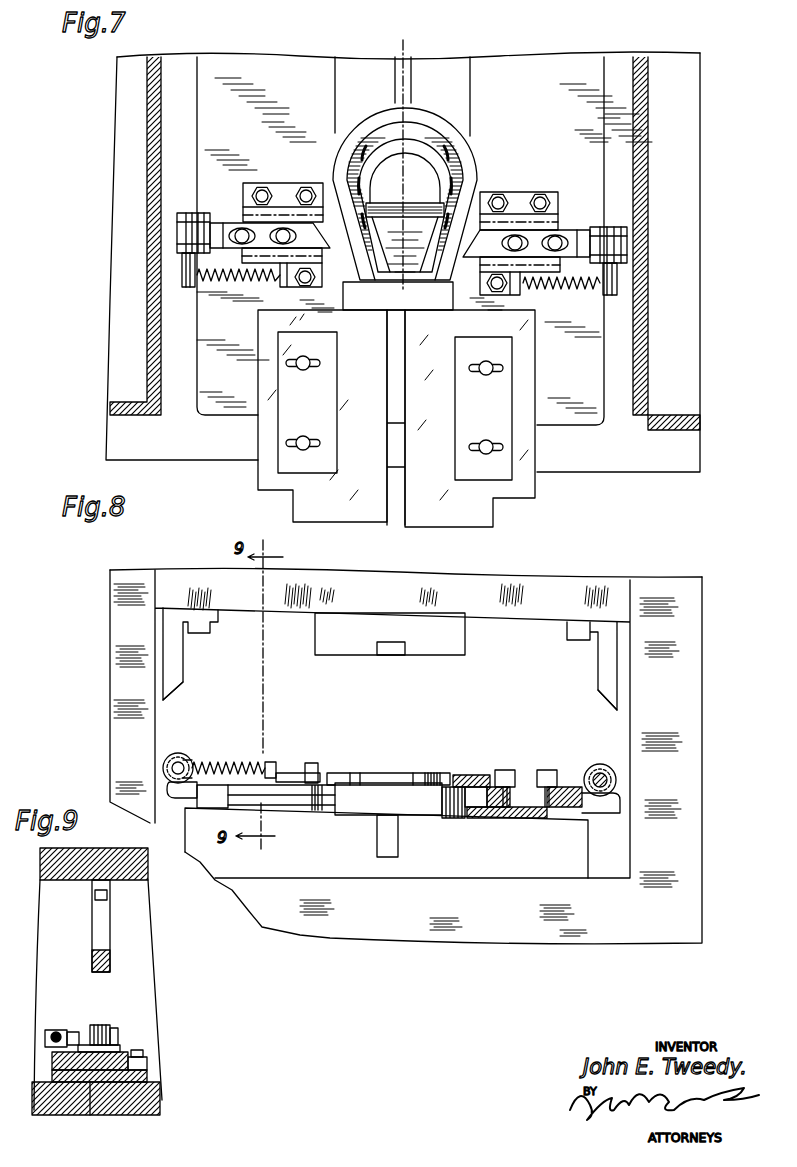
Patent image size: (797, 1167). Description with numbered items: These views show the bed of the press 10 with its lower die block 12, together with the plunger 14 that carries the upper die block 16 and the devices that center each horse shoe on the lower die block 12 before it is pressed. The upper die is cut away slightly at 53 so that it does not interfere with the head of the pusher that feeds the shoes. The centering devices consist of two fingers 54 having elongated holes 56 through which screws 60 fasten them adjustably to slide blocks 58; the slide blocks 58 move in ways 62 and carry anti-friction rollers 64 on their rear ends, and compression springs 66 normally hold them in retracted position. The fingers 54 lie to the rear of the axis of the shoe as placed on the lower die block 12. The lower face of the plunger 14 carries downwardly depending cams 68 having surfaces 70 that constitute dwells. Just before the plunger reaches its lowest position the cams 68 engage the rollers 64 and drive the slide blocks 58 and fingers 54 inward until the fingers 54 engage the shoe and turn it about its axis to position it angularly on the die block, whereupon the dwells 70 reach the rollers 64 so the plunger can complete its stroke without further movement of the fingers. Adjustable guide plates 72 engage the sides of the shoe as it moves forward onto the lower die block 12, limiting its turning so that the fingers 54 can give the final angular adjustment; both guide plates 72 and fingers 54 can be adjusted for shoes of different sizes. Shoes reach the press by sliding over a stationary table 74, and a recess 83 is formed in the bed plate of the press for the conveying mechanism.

In FIG. 7, the bed of the press 10 is at (403, 262).
In FIG. 8, the bed of the press 10 is at (537, 872).
In FIG. 9, the bed of the press 10 is at (160, 1103).
In FIG. 7, the lower die block 12 is at (467, 153).
In FIG. 8, the lower die block 12 is at (396, 785).
In FIG. 7, the plunger 14 is at (392, 94).
In FIG. 8, the plunger 14 is at (406, 755).
In FIG. 9, the plunger 14 is at (115, 848).
In FIG. 8, the upper die block 16 is at (465, 638).
In FIG. 8, the cut-away portion of upper die 53 is at (397, 656).
In FIG. 7, the fingers 54 is at (312, 284).
In FIG. 8, the fingers 54 is at (311, 772).
In FIG. 7, the elongated holes 56 is at (298, 232).
In FIG. 8, the elongated holes 56 is at (547, 772).
In FIG. 9, the elongated holes 56 is at (116, 1040).
In FIG. 7, the slide blocks 58 is at (190, 213).
In FIG. 8, the slide blocks 58 is at (208, 793).
In FIG. 9, the slide blocks 58 is at (80, 1110).
In FIG. 7, the screws 60 is at (240, 230).
In FIG. 8, the screws 60 is at (505, 772).
In FIG. 9, the screws 60 is at (98, 1024).
In FIG. 7, the ways 62 is at (280, 207).
In FIG. 9, the ways 62 is at (130, 1050).
In FIG. 7, the anti-friction rollers 64 is at (182, 233).
In FIG. 8, the anti-friction rollers 64 is at (180, 753).
In FIG. 9, the anti-friction rollers 64 is at (110, 1030).
In FIG. 7, the compression springs 66 is at (230, 288).
In FIG. 8, the compression springs 66 is at (232, 762).
In FIG. 8, the cams 68 is at (185, 656).
In FIG. 9, the cams 68 is at (108, 930).
In FIG. 8, the dwell surfaces 70 is at (183, 681).
In FIG. 7, the guide plates 72 is at (396, 412).
In FIG. 7, the stationary table 74 is at (384, 523).
In FIG. 8, the recess 83 is at (398, 842).